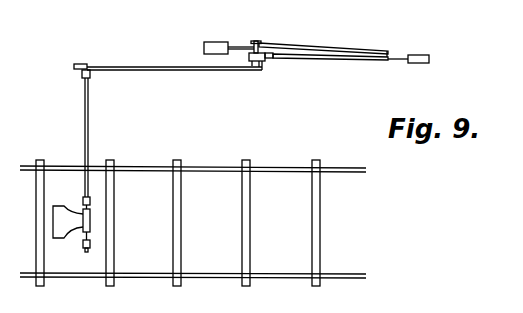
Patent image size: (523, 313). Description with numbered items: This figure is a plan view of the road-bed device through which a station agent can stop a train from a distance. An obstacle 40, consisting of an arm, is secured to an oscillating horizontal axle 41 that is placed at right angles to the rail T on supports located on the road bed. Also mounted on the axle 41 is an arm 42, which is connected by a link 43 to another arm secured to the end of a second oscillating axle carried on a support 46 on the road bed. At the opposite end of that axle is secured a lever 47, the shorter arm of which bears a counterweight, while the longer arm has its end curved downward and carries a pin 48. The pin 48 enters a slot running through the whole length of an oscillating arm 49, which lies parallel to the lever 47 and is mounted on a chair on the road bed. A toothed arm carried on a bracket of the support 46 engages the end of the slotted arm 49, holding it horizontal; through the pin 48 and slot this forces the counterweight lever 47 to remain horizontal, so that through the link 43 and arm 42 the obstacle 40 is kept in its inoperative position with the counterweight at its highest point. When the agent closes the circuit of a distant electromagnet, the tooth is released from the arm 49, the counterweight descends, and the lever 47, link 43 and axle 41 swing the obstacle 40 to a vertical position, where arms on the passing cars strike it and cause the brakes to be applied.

The obstacle 40 is at (60, 216).
The oscillating horizontal axle 41 is at (89, 128).
The arm 42 is at (78, 65).
The link 43 is at (153, 71).
The support 46 is at (263, 62).
The lever 47 is at (302, 46).
The pin 48 is at (393, 53).
The oscillating arm 49 is at (330, 60).
The rail T is at (202, 169).